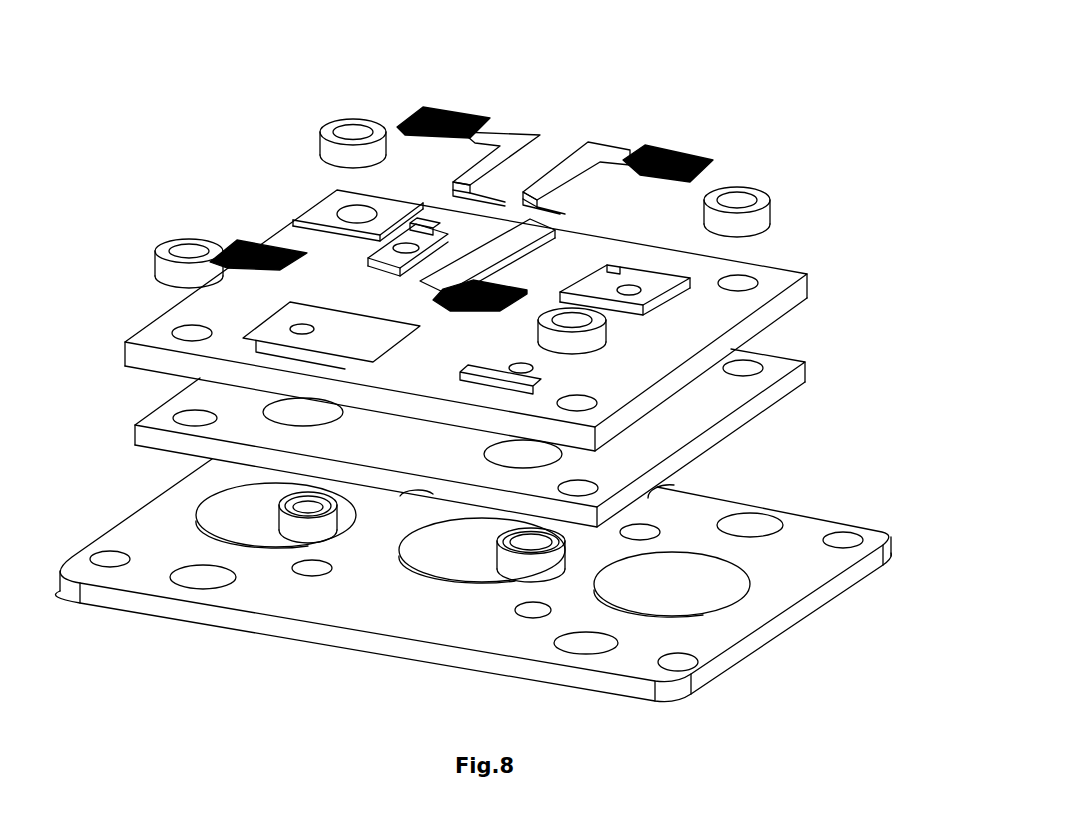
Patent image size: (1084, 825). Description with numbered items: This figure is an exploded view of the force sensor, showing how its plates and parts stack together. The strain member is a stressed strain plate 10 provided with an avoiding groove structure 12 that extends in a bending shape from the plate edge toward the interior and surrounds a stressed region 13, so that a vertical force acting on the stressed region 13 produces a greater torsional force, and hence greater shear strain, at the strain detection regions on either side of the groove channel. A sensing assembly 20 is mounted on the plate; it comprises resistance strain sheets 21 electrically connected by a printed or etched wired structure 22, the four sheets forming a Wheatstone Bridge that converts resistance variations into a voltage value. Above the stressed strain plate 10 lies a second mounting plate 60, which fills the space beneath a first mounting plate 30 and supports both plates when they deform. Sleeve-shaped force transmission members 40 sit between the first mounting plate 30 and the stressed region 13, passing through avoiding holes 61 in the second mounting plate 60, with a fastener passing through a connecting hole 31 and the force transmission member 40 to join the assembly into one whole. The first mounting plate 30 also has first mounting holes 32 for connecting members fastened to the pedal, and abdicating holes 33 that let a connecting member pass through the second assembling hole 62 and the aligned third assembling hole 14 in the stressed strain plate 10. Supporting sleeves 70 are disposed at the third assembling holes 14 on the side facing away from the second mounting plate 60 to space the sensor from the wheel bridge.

The stressed strain plate 10 is at (233, 302).
The avoiding groove structure 12 is at (427, 230).
The stressed region 13 is at (503, 358).
The third assembling hole 14 is at (753, 288).
The sensing assembly 20 is at (555, 107).
The resistance strain sheet 21 is at (618, 134).
The wired structure 22 is at (507, 148).
The first mounting plate 30 is at (727, 630).
The connecting hole 31 is at (635, 540).
The first mounting hole 32 is at (110, 565).
The abdicating hole 33 is at (203, 578).
The force transmission member 40 is at (530, 565).
The second mounting plate 60 is at (706, 409).
The avoiding hole 61 is at (525, 457).
The second assembling hole 62 is at (583, 488).
The supporting sleeve 70 is at (343, 152).